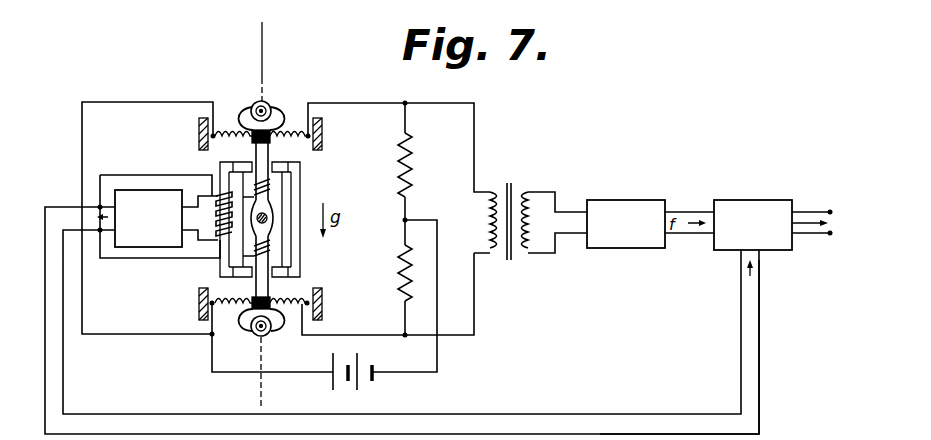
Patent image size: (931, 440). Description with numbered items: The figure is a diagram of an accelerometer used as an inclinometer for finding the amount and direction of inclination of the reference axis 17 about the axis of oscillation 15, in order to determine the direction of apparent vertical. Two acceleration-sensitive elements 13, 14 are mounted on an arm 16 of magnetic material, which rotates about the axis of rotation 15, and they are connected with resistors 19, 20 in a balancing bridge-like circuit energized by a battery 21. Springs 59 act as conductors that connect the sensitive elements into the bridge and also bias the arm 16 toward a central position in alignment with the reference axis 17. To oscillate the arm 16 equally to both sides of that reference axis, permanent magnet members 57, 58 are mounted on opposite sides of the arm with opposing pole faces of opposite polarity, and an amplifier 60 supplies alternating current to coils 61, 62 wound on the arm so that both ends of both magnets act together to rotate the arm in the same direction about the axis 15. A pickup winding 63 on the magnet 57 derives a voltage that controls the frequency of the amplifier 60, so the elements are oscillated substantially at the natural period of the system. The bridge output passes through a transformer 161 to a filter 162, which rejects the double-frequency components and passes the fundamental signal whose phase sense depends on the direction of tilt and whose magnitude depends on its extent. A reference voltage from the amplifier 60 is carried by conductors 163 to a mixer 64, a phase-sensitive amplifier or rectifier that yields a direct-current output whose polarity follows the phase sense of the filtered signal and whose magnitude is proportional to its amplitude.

The acceleration-sensitive element 13 is at (268, 104).
The acceleration-sensitive element 14 is at (266, 337).
The axis of rotation 15 is at (268, 212).
The arm 16 is at (262, 290).
The reference axis 17 is at (263, 53).
The resistor 19 is at (412, 166).
The resistor 20 is at (399, 276).
The battery 21 is at (362, 392).
The permanent magnet member 57 is at (223, 247).
The permanent magnet member 58 is at (300, 246).
The springs 59 is at (228, 130).
The amplifier 60 is at (150, 238).
The coil 61 is at (254, 204).
The coil 62 is at (272, 250).
The pickup winding 63 is at (215, 194).
The mixer 64 is at (763, 200).
The transformer 161 is at (510, 258).
The filter 162 is at (620, 200).
The conductors 163 is at (655, 434).